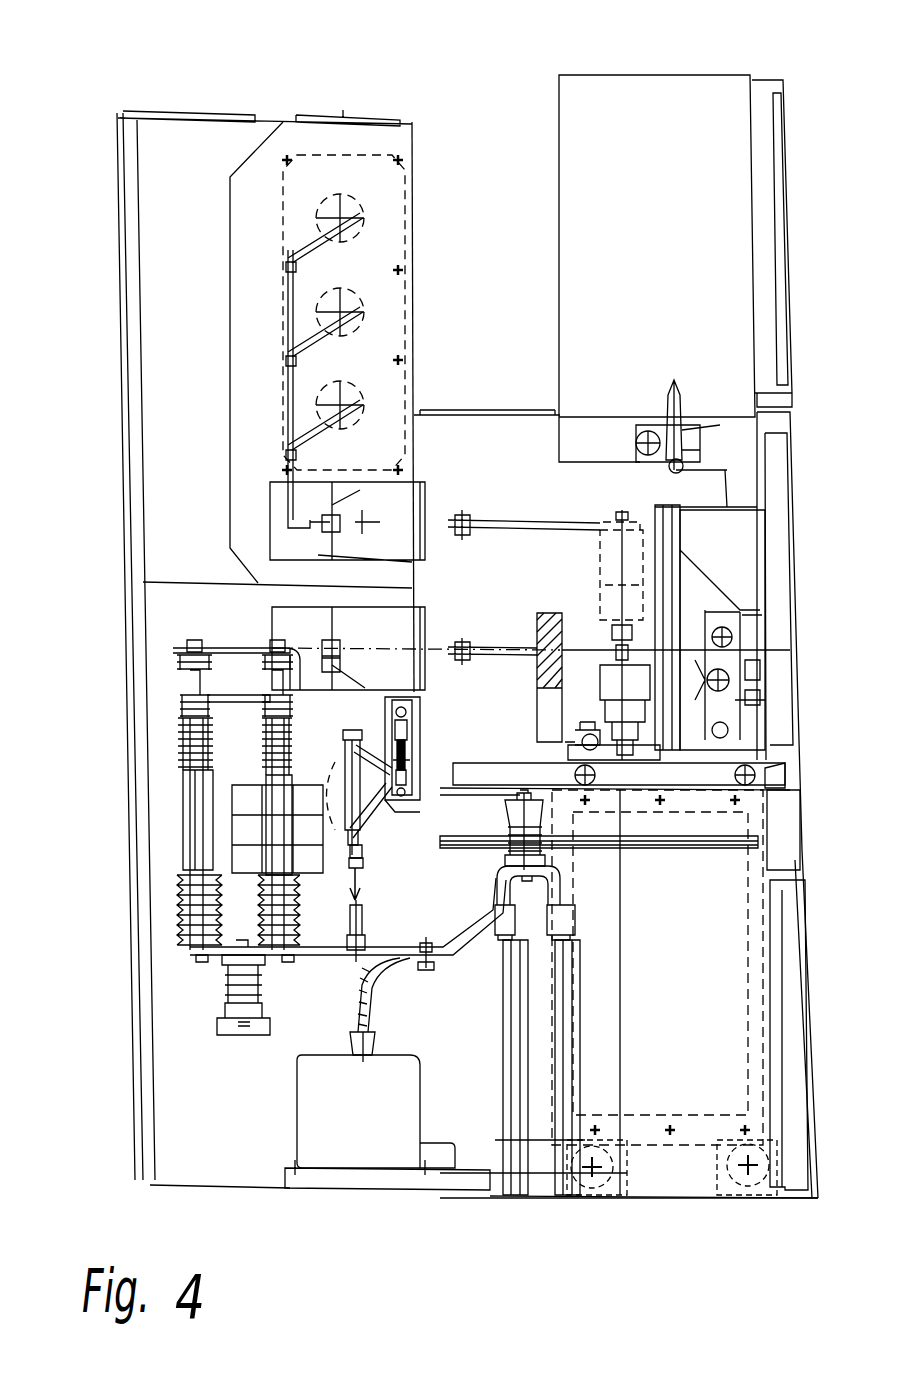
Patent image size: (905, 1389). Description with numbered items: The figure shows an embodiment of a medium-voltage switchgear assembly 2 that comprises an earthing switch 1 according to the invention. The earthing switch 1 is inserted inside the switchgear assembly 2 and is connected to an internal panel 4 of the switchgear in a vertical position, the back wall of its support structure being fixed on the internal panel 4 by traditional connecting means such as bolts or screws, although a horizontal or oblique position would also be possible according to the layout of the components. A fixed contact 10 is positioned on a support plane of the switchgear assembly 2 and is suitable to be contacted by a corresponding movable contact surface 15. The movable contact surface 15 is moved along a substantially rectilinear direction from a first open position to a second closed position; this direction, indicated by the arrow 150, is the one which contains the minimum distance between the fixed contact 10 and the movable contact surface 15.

The switchgear assembly 2 is at (460, 5).
The earthing switch 1 is at (333, 742).
The internal panel 4 is at (416, 714).
The movable contact surface 15 is at (357, 848).
The arrow 150 is at (358, 878).
The fixed contact 10 is at (362, 942).